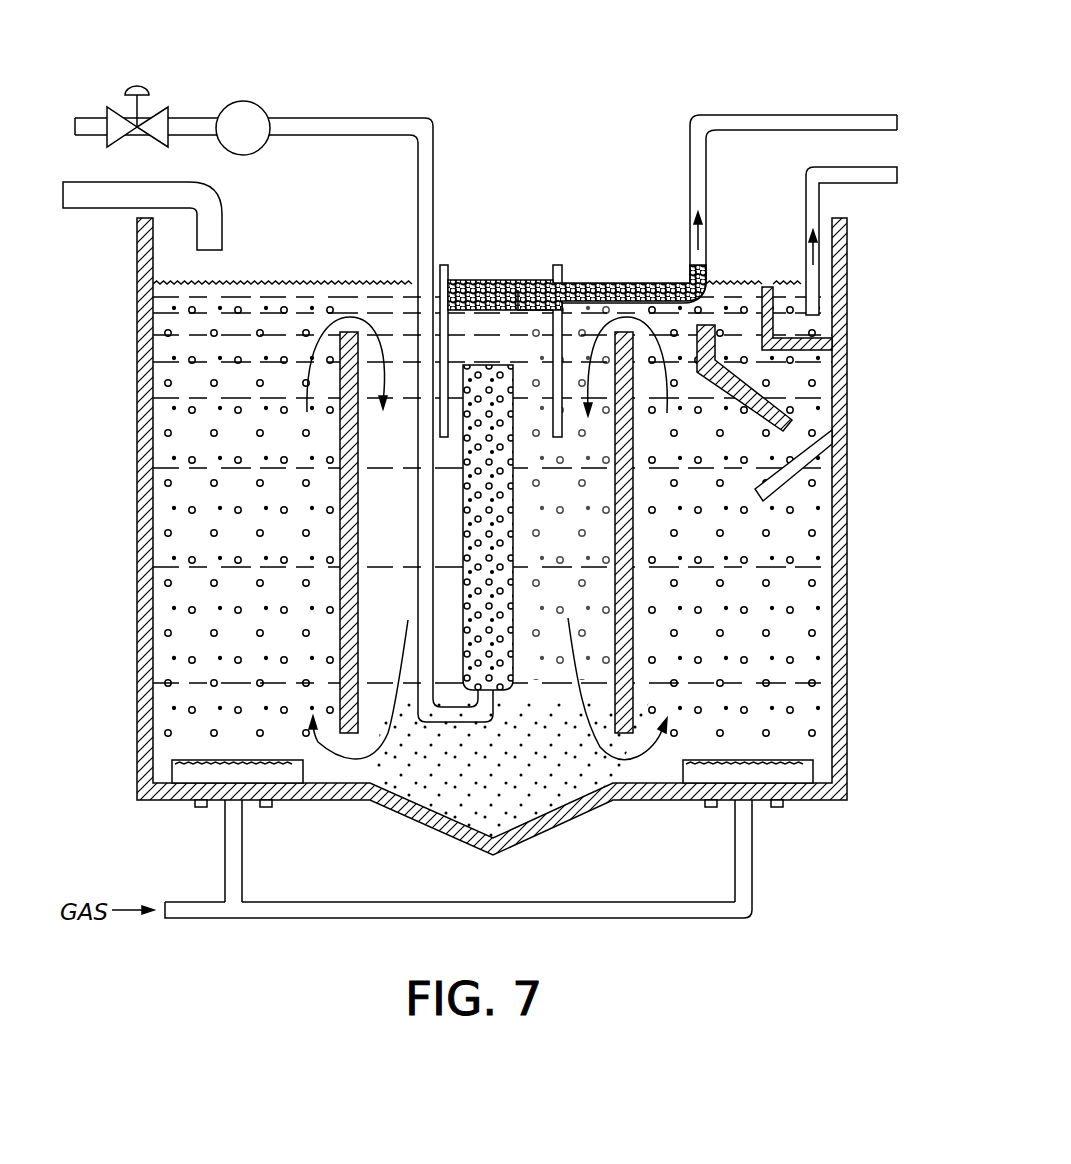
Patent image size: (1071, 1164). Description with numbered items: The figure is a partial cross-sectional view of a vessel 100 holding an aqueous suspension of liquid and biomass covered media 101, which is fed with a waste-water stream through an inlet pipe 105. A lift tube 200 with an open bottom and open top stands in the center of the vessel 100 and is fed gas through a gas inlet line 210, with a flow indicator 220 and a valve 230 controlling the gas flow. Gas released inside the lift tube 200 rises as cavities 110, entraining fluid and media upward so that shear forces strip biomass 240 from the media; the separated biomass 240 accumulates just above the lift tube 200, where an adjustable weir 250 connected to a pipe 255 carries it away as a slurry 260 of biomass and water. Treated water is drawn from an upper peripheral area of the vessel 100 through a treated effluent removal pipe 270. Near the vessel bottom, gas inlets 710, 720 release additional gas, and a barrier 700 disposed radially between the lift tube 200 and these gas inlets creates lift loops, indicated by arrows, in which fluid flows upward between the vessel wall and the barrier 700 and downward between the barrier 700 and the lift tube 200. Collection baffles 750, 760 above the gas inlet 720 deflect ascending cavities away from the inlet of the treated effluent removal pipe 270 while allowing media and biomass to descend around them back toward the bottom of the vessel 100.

The vessel 100 is at (840, 750).
The biomass covered media 101 is at (212, 550).
The inlet pipe 105 is at (103, 190).
The cavities 110 is at (217, 528).
The lift tube 200 is at (513, 563).
The gas inlet line 210 is at (428, 130).
The flow indicator 220 is at (250, 103).
The valve 230 is at (137, 88).
The biomass 240 is at (507, 283).
The weir 250 is at (773, 376).
The pipe 255 is at (835, 120).
The slurry 260 is at (630, 290).
The treated effluent removal pipe 270 is at (880, 177).
The barrier 700 is at (340, 437).
The gas inlet 710 is at (197, 772).
The gas inlet 720 is at (753, 772).
The collection baffle 750 is at (737, 382).
The collection baffle 760 is at (797, 477).